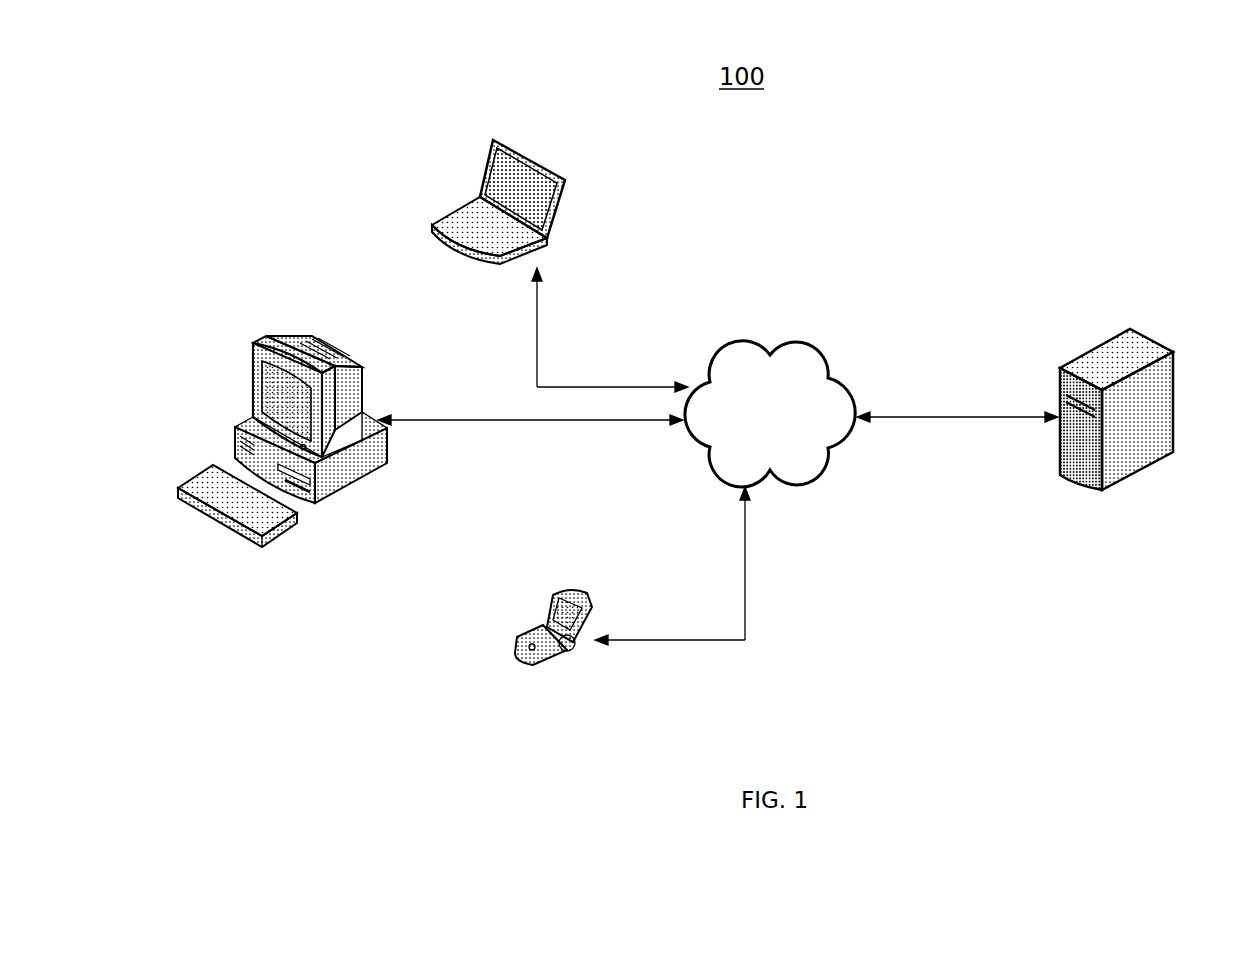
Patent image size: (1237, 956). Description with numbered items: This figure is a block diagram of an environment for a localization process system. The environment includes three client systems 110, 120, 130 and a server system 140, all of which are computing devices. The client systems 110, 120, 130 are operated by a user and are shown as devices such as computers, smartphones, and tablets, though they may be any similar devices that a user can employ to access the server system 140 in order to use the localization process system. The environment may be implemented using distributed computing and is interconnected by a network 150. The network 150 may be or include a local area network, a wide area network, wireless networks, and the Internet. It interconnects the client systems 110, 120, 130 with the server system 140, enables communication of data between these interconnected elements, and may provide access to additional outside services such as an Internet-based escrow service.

The client system 110 is at (370, 477).
The client system 120 is at (484, 157).
The client system 130 is at (553, 658).
The server system 140 is at (1107, 342).
The network 150 is at (770, 414).